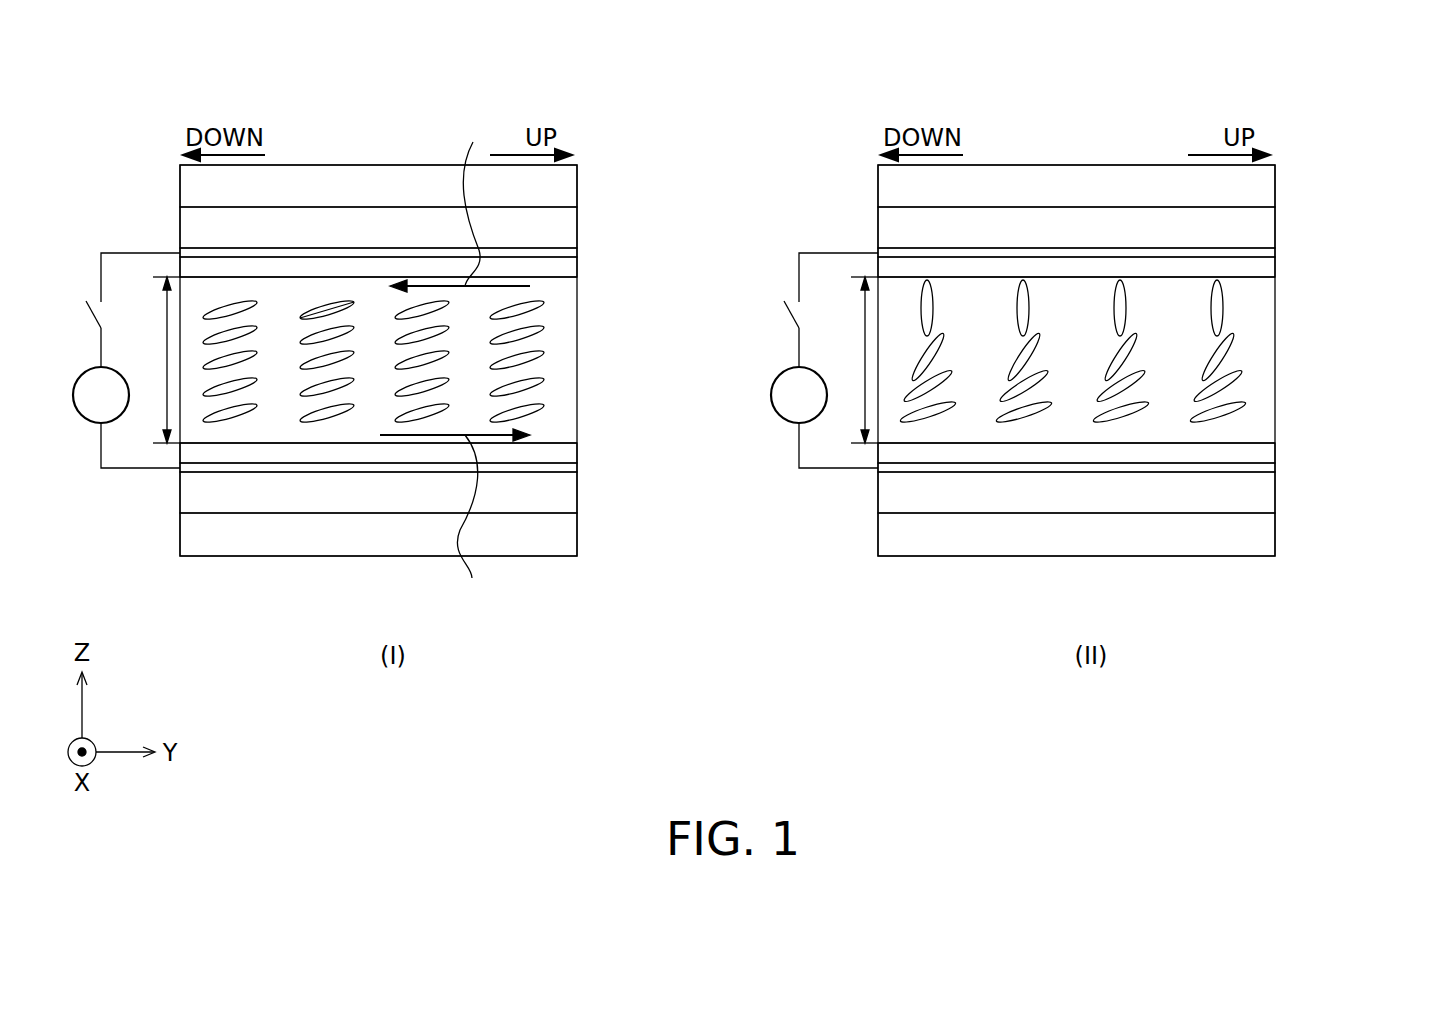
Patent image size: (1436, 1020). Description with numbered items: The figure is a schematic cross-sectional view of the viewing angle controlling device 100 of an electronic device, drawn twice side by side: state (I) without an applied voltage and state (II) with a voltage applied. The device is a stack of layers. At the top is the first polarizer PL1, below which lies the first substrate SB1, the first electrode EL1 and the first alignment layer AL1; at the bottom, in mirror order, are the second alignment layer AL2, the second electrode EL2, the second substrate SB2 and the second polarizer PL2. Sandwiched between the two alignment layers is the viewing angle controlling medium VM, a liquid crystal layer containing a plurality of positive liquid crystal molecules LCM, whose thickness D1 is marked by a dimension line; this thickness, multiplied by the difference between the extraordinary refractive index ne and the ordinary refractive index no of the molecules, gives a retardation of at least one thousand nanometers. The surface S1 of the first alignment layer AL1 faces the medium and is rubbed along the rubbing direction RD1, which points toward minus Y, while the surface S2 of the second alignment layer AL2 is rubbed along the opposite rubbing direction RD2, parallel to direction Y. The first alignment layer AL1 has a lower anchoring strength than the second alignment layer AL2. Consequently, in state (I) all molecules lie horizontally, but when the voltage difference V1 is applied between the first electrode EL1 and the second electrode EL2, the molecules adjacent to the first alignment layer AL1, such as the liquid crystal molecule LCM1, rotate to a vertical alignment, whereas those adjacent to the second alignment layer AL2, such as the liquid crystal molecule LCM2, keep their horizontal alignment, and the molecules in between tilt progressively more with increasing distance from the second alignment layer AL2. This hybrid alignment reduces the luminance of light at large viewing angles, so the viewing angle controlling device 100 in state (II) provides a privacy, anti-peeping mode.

The viewing angle controlling device 100 is at (150, 145).
The first polarizer PL1 is at (572, 186).
The first substrate SB1 is at (572, 220).
The first electrode EL1 is at (572, 252).
The first alignment layer AL1 is at (572, 266).
The surface of the first alignment layer S1 is at (568, 277).
The viewing angle controlling medium VM is at (553, 302).
The liquid crystal molecules LCM is at (532, 355).
The liquid crystal molecule adjacent to the first alignment layer LCM1 is at (540, 326).
The liquid crystal molecule adjacent to the second alignment layer LCM2 is at (527, 412).
The surface of the second alignment layer S2 is at (565, 443).
The second alignment layer AL2 is at (572, 455).
The second electrode EL2 is at (572, 468).
The second substrate SB2 is at (572, 497).
The second polarizer PL2 is at (572, 535).
The rubbing direction of the first alignment layer RD1 is at (472, 201).
The rubbing direction of the second alignment layer RD2 is at (472, 523).
The thickness of the viewing angle controlling medium D1 is at (504, 360).
The voltage difference V1 is at (475, 360).
The ordinary refractive index no is at (323, 310).
The extraordinary refractive index ne is at (348, 303).